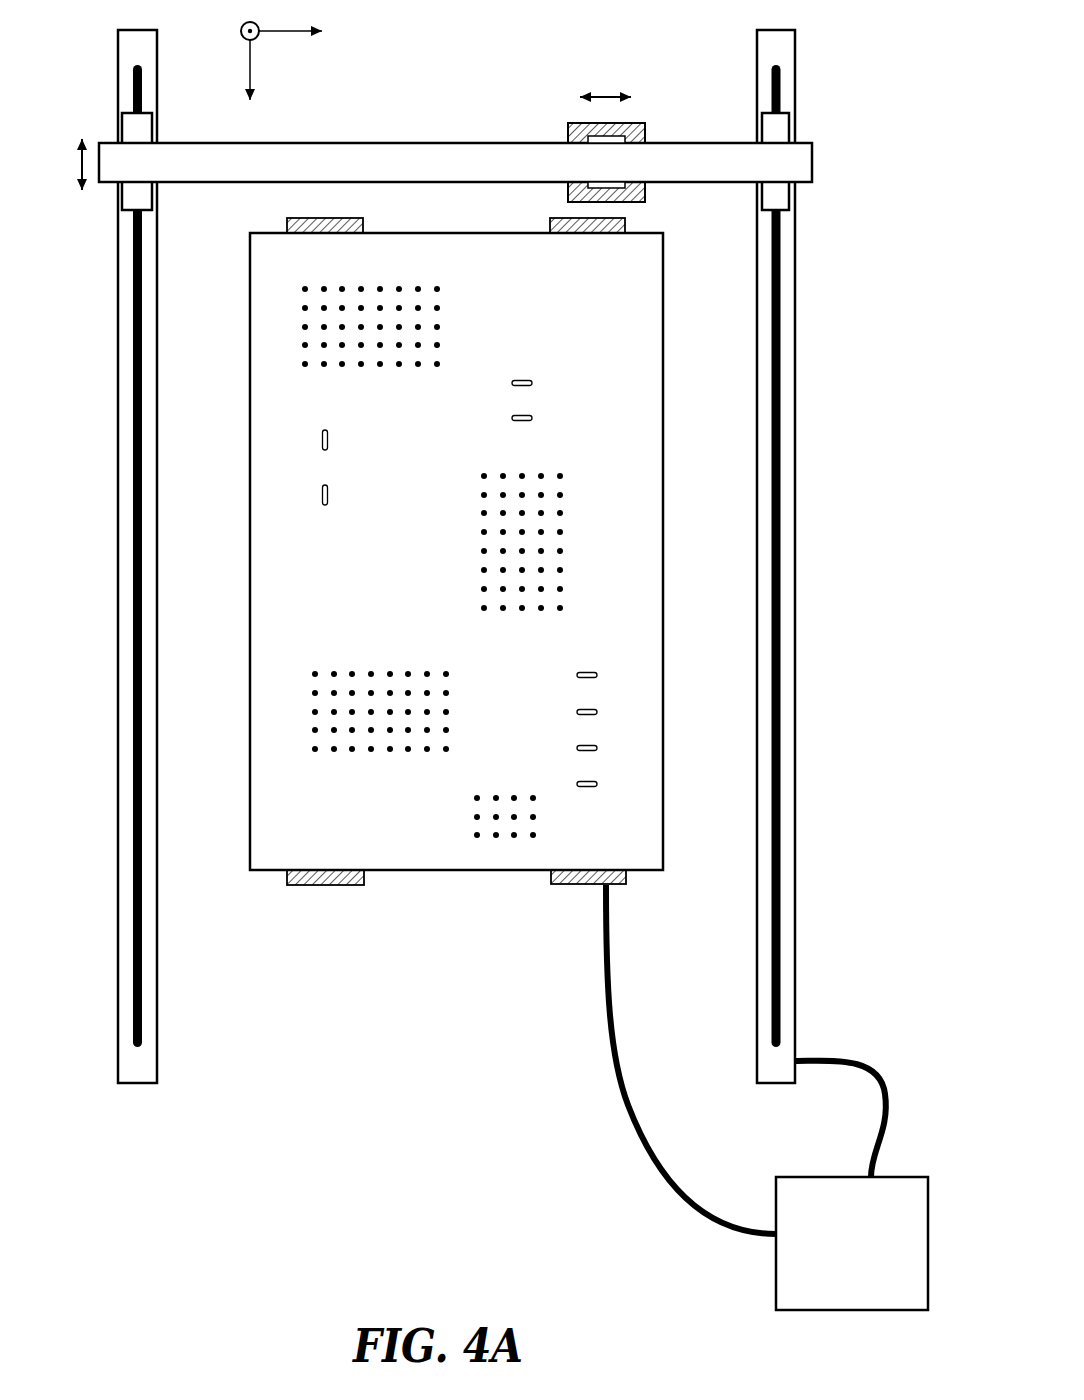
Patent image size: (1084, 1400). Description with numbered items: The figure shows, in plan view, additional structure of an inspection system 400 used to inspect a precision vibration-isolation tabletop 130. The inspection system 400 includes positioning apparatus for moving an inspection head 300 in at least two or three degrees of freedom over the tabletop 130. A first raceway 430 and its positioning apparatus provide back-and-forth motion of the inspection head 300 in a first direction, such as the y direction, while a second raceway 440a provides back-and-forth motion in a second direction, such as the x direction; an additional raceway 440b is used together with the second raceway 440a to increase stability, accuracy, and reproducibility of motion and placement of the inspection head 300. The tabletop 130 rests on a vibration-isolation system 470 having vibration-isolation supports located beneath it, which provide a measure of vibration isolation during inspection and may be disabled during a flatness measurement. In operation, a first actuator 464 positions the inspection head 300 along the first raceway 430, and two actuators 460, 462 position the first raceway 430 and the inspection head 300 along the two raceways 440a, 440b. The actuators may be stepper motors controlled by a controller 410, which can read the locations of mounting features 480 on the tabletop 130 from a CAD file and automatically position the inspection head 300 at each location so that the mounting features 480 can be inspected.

The inspection system 400 is at (505, 655).
The tabletop 130 is at (495, 598).
The inspection head 300 is at (563, 130).
The controller 410 is at (852, 1243).
The first raceway 430 is at (494, 163).
The second raceway 440a is at (158, 931).
The raceway 440b is at (752, 932).
The actuator 460 is at (137, 190).
The actuator 462 is at (775, 191).
The first actuator 464 is at (645, 192).
The vibration-isolation system 470 is at (325, 885).
The mounting features 480 is at (594, 710).